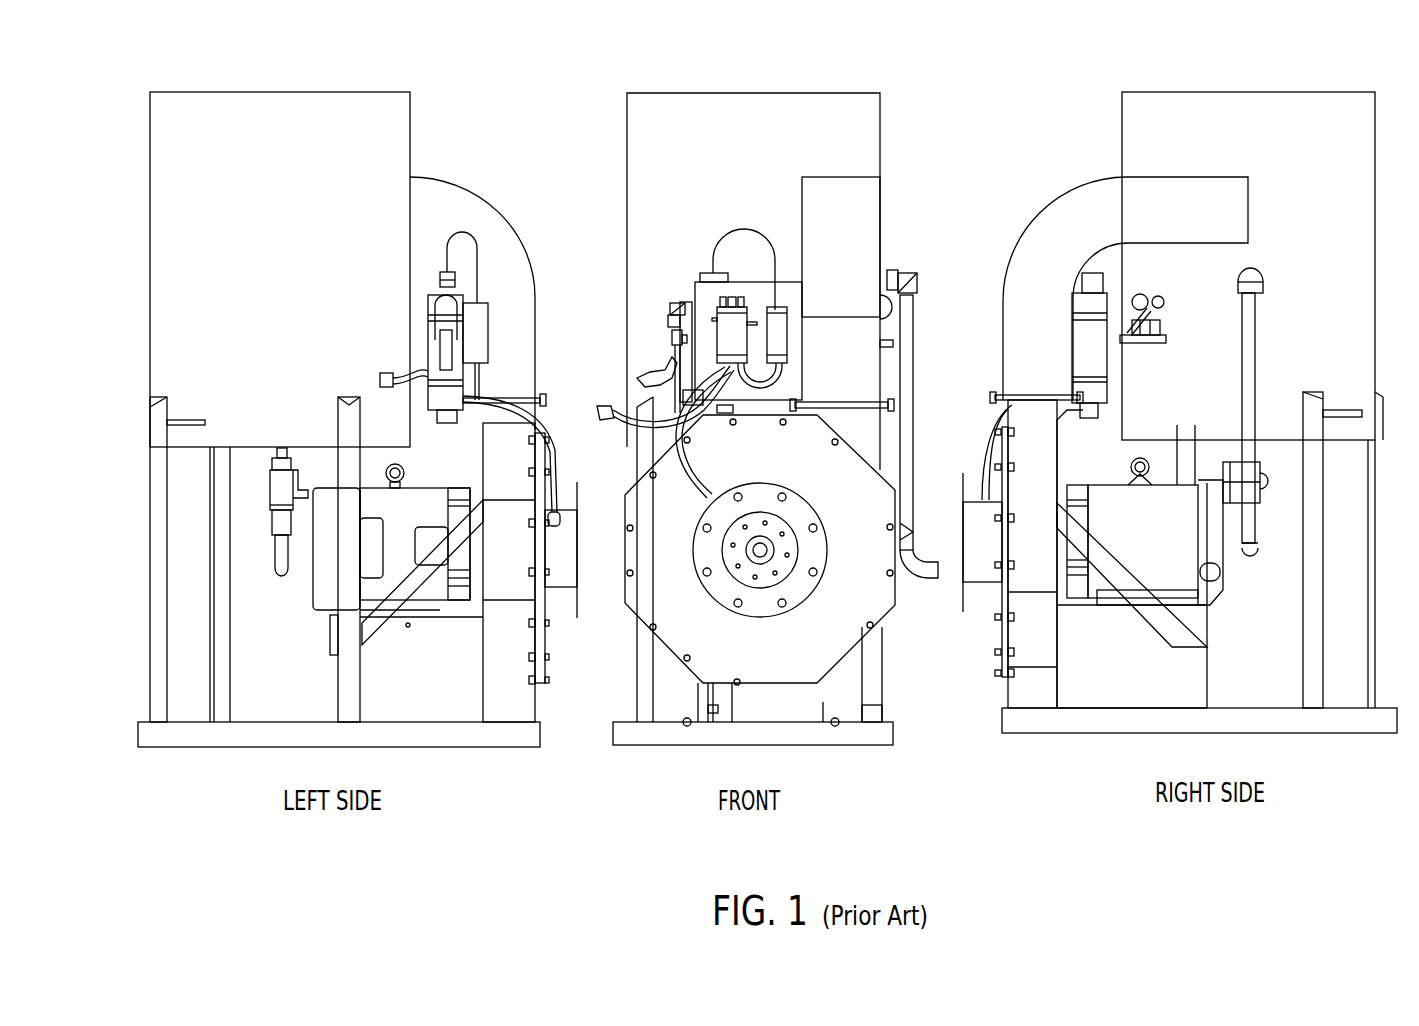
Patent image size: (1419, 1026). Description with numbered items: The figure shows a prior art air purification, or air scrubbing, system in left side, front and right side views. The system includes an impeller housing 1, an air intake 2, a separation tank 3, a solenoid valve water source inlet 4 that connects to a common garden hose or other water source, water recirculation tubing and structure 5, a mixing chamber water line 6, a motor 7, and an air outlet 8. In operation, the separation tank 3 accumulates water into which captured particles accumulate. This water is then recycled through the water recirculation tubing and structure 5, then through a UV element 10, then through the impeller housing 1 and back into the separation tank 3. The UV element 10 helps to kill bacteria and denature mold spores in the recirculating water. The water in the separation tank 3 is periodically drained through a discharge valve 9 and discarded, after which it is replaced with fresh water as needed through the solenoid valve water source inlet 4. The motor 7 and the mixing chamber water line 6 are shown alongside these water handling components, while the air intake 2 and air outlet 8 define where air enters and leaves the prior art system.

The impeller housing 1 is at (547, 637).
The air intake 2 is at (583, 563).
The separation tank 3 is at (1150, 148).
The solenoid valve water source inlet 4 is at (1136, 347).
The water recirculation tubing and structure 5 is at (427, 367).
The mixing chamber water line 6 is at (507, 390).
The motor 7 is at (400, 551).
The air outlet 8 is at (309, 84).
The discharge valve 9 is at (1263, 493).
The UV element 10 is at (430, 283).